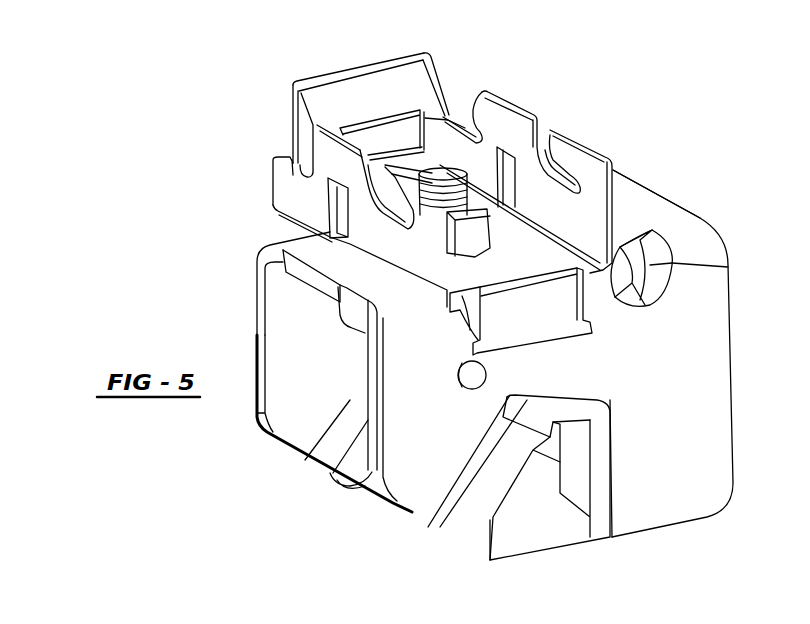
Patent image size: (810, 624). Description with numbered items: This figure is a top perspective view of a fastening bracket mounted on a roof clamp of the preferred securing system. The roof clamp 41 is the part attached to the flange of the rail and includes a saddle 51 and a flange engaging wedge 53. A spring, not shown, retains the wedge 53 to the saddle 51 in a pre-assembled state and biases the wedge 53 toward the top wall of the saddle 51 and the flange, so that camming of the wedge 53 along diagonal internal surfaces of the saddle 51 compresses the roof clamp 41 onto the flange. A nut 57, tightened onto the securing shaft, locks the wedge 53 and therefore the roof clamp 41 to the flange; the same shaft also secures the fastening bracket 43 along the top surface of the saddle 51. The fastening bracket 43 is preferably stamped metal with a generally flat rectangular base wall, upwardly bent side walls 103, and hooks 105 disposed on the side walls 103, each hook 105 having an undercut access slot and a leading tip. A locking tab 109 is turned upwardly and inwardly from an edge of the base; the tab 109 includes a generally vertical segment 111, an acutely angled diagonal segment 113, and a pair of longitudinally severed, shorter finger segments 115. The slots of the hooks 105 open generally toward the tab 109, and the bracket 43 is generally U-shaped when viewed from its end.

The roof clamp 41 is at (680, 432).
The fastening bracket 43 is at (560, 129).
The saddle 51 is at (682, 366).
The flange engaging wedge 53 is at (528, 517).
The nut 57 is at (467, 243).
The side walls 103 is at (288, 187).
The hooks 105 is at (487, 107).
The locking tab 109 is at (440, 82).
The vertical segment 111 is at (290, 128).
The diagonal segment 113 is at (370, 90).
The finger segments 115 is at (485, 100).